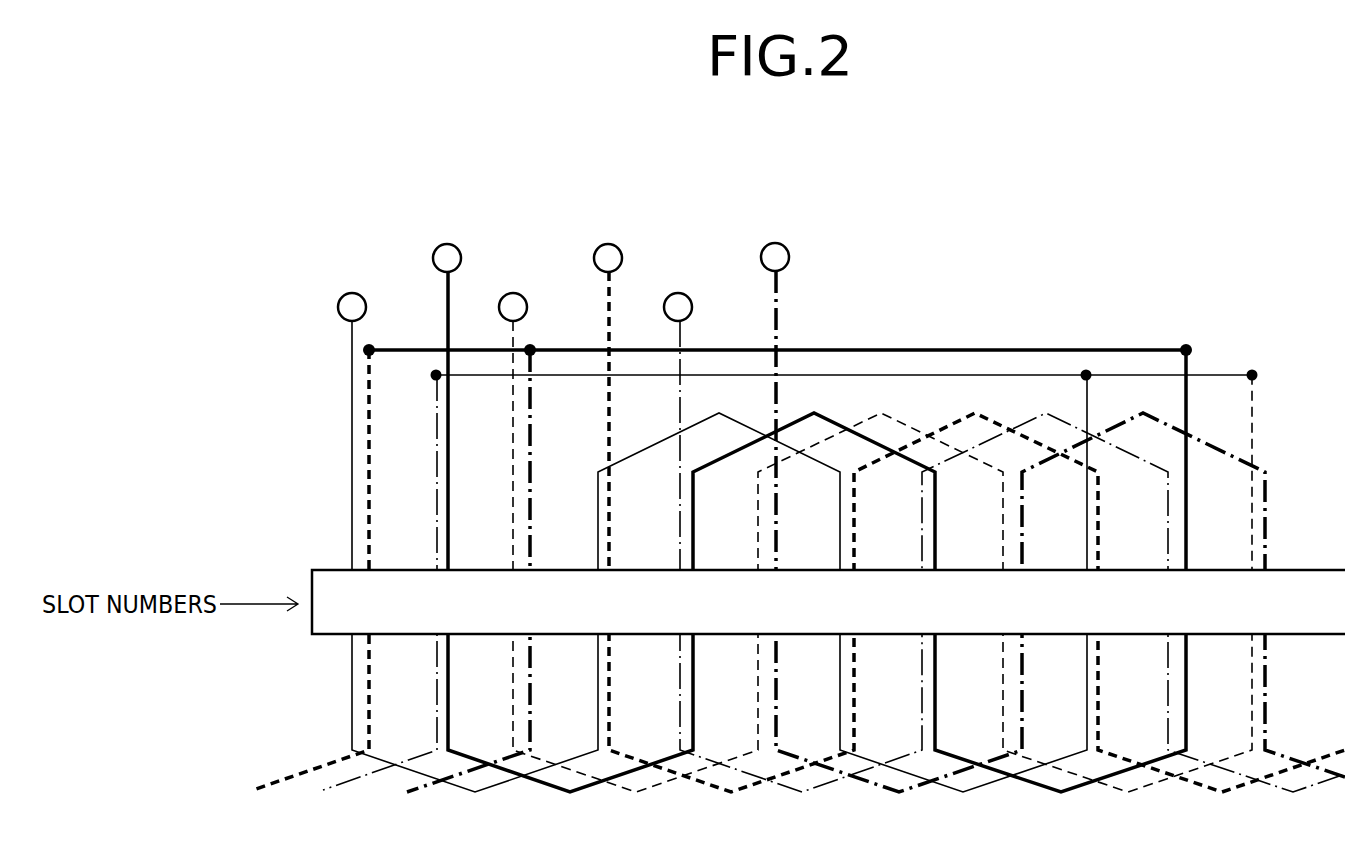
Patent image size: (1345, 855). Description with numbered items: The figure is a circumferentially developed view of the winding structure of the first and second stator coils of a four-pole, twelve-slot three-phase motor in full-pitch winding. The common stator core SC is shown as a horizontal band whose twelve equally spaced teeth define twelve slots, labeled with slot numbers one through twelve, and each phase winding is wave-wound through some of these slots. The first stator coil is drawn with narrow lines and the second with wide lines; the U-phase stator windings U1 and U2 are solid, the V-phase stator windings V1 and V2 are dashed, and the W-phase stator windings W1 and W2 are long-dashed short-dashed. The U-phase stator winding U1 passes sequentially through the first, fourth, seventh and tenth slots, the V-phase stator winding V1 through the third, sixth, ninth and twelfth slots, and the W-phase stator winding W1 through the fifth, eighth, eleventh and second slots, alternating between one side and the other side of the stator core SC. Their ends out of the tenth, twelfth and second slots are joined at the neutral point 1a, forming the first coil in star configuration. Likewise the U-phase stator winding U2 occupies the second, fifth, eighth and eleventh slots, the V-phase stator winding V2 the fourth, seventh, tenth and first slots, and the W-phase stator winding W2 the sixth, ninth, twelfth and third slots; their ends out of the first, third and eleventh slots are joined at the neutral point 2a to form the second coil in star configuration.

The neutral point 1a is at (898, 375).
The neutral point 2a is at (991, 348).
The stator core SC is at (330, 577).
The U-phase stator winding U1 is at (353, 288).
The U-phase stator winding U2 is at (447, 241).
The V-phase stator winding V1 is at (513, 288).
The V-phase stator winding V2 is at (608, 239).
The W-phase stator winding W1 is at (678, 288).
The W-phase stator winding W2 is at (773, 239).